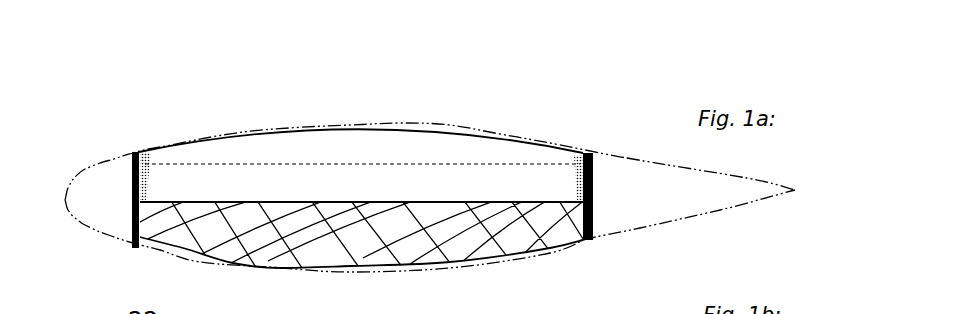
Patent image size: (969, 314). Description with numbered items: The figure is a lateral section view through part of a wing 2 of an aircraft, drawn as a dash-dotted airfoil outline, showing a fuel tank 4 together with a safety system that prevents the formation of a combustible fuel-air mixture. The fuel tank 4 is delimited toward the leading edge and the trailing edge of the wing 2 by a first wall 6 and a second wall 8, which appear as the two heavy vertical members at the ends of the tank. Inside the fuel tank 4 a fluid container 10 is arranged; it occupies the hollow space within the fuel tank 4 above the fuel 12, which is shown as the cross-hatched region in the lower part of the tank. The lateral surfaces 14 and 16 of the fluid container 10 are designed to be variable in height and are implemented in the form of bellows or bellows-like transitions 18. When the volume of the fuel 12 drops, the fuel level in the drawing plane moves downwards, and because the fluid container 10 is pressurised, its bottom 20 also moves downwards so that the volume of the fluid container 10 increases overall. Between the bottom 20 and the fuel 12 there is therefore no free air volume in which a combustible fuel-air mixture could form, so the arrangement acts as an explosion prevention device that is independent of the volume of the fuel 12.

The wing 2 is at (643, 120).
The fuel tank 4 is at (583, 240).
The first wall 6 is at (590, 157).
The second wall 8 is at (137, 157).
The fluid container 10 is at (253, 147).
The fuel 12 is at (270, 247).
The lateral surface 14 is at (153, 157).
The lateral surface 16 is at (577, 175).
The bellows-like transitions 18 is at (593, 188).
The bottom 20 is at (353, 200).